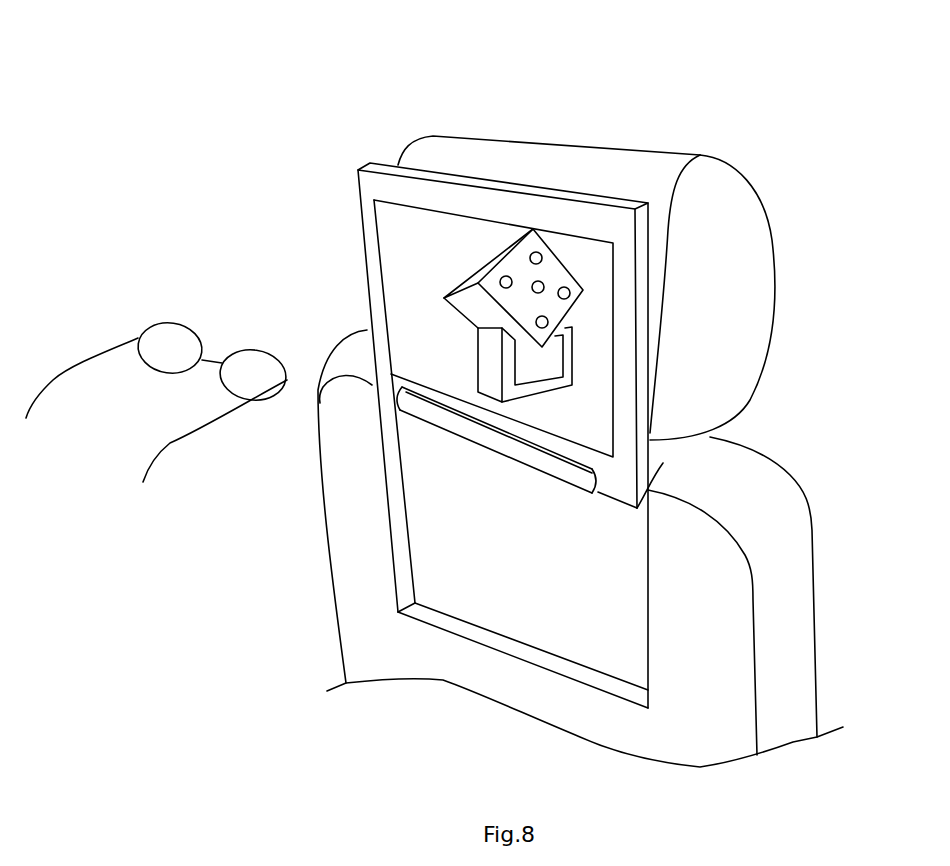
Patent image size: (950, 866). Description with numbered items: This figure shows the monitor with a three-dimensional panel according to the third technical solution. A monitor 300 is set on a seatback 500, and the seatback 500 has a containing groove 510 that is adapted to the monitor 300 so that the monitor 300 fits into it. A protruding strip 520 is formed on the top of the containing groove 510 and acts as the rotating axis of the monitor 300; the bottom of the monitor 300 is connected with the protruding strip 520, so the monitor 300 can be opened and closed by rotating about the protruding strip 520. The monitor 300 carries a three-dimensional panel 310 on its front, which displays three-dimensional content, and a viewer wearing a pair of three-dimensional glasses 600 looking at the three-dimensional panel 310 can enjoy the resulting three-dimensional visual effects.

The monitor 300 is at (376, 191).
The 3D panel 310 is at (402, 270).
The seatback 500 is at (640, 177).
The containing groove 510 is at (620, 588).
The protruding strip 520 is at (555, 463).
The 3D glasses 600 is at (165, 368).